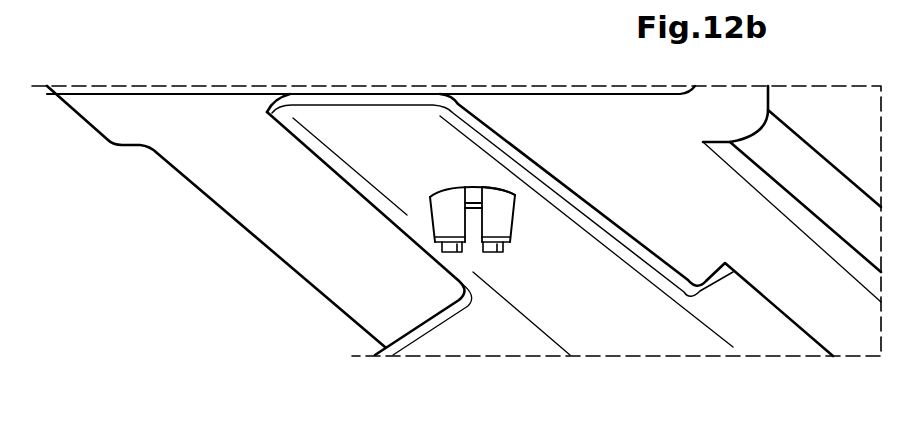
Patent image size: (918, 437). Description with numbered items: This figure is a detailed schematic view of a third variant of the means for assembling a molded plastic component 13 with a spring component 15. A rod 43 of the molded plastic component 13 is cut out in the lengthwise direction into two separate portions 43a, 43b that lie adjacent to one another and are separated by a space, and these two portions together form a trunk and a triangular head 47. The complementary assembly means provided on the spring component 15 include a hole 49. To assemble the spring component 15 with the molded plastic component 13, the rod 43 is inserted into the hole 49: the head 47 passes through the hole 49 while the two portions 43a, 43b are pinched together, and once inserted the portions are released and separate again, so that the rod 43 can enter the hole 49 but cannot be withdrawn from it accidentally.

The molded plastic component 13 is at (112, 144).
The spring component 15 is at (323, 174).
The rod 43 is at (461, 289).
The first portion of the rod 43a is at (447, 205).
The second portion of the rod 43b is at (503, 223).
The triangular head 47 is at (447, 221).
The hole 49 is at (514, 206).